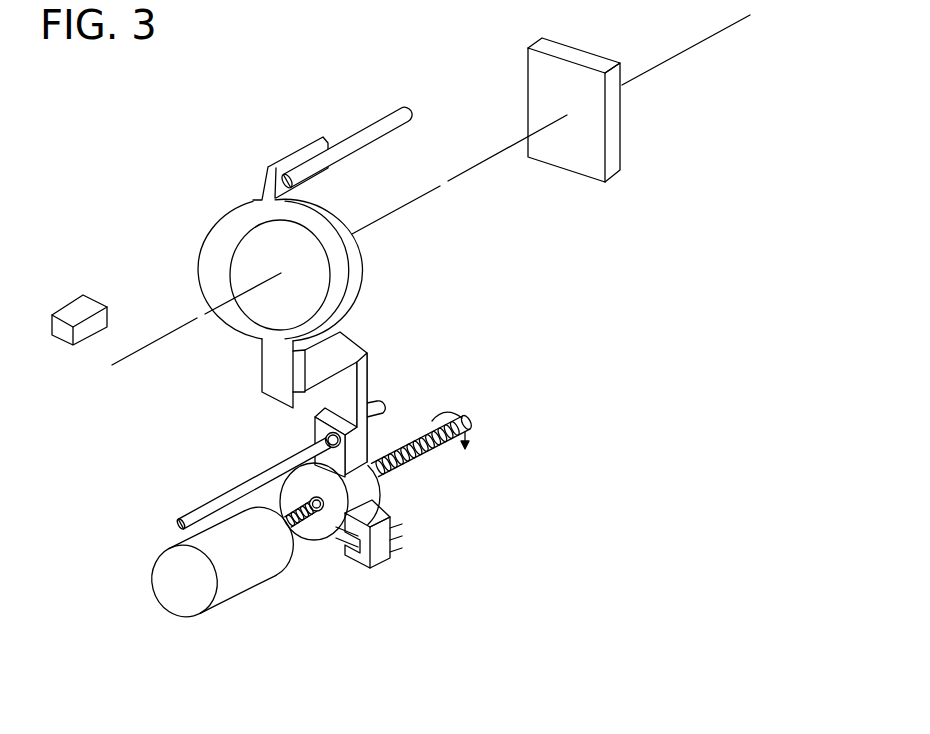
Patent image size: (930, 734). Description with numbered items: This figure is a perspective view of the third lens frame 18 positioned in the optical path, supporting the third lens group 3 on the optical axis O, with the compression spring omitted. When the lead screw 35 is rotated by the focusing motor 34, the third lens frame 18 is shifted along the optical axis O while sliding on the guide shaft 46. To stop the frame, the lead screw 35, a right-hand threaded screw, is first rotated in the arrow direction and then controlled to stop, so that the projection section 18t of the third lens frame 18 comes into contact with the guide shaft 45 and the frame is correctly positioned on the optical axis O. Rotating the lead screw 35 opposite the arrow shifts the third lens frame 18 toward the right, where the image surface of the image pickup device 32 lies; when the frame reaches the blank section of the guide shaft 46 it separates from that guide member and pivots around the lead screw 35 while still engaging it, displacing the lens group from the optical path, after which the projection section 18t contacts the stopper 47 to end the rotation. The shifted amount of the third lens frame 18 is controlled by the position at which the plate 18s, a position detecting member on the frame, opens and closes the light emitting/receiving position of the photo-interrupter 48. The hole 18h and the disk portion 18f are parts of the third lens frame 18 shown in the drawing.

The third lens group 3 is at (239, 272).
The third lens frame 18 is at (291, 338).
The projection section 18t is at (261, 192).
The guide hole of lens holder 18h is at (323, 430).
The disk portion of lens holder 18f is at (316, 520).
The plate 18s is at (356, 537).
The image pickup device 32 is at (567, 170).
The focusing motor 34 is at (247, 571).
The lead screw 35 is at (433, 456).
The guide shaft 45 is at (355, 135).
The guide shaft 46 is at (209, 500).
The stopper 47 is at (64, 318).
The photo-interrupter 48 is at (374, 556).
The optical axis O is at (131, 352).